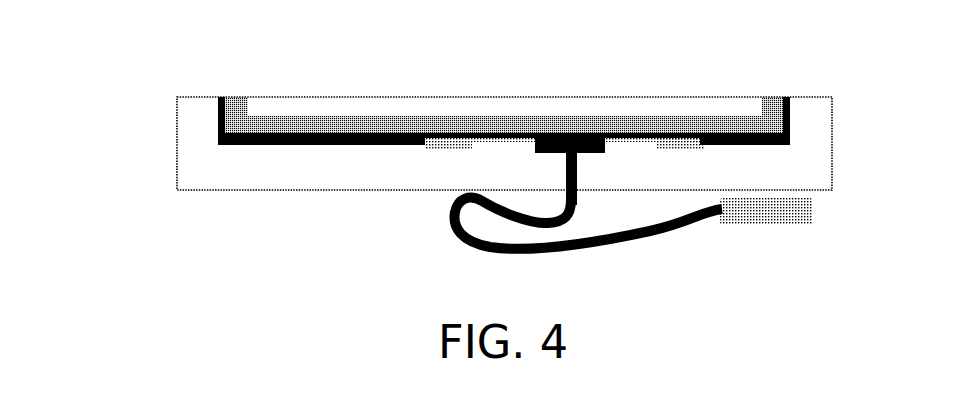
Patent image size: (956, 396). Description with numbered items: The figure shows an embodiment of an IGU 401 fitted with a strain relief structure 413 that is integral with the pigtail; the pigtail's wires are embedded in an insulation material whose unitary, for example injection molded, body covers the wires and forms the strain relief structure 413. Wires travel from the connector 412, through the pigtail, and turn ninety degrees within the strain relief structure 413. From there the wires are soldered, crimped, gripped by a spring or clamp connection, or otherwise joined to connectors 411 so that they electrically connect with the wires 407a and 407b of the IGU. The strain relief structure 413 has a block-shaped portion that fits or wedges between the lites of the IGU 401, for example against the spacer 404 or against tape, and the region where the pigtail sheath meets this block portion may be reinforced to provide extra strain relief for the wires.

The IGU 401 is at (78, 143).
The spacer 404 is at (267, 130).
The wire 407a is at (788, 107).
The wire 407b is at (218, 108).
The connectors 411 is at (445, 145).
The connector 412 is at (770, 218).
The strain relief structure 413 is at (590, 130).